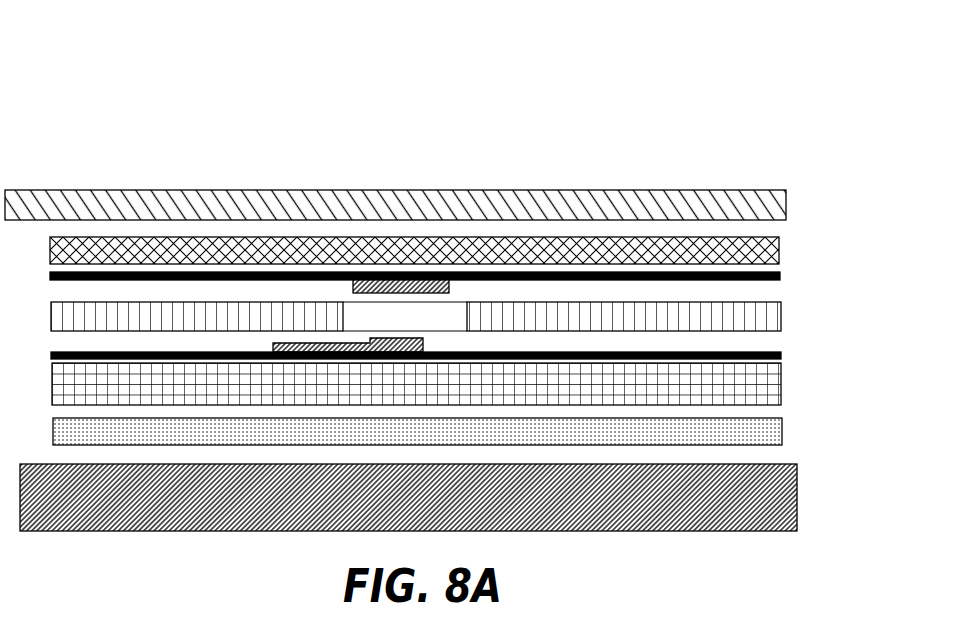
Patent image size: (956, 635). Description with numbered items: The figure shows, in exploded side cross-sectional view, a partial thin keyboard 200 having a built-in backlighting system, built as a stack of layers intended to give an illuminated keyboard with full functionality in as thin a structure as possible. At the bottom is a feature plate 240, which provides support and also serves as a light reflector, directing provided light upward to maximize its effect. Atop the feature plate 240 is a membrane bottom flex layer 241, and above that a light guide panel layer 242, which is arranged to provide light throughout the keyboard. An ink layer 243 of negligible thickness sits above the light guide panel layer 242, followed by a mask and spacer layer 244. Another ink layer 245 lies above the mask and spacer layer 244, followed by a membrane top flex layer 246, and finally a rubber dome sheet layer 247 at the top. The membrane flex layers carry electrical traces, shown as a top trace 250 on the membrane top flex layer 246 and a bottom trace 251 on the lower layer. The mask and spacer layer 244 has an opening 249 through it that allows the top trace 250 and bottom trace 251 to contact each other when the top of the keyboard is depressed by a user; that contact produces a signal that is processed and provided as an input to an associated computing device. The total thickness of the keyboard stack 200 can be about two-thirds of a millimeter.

The partial keyboard 200 is at (170, 89).
The feature plate 240 is at (778, 492).
The membrane bottom flex layer 241 is at (782, 432).
The light guide panel layer 242 is at (781, 386).
The ink layer 243 is at (781, 352).
The mask and spacer layer 244 is at (781, 314).
The ink layer 245 is at (778, 283).
The membrane top flex layer 246 is at (779, 249).
The rubber dome sheet layer 247 is at (786, 206).
The opening 249 is at (455, 318).
The top trace 250 is at (437, 278).
The bottom trace 251 is at (370, 338).